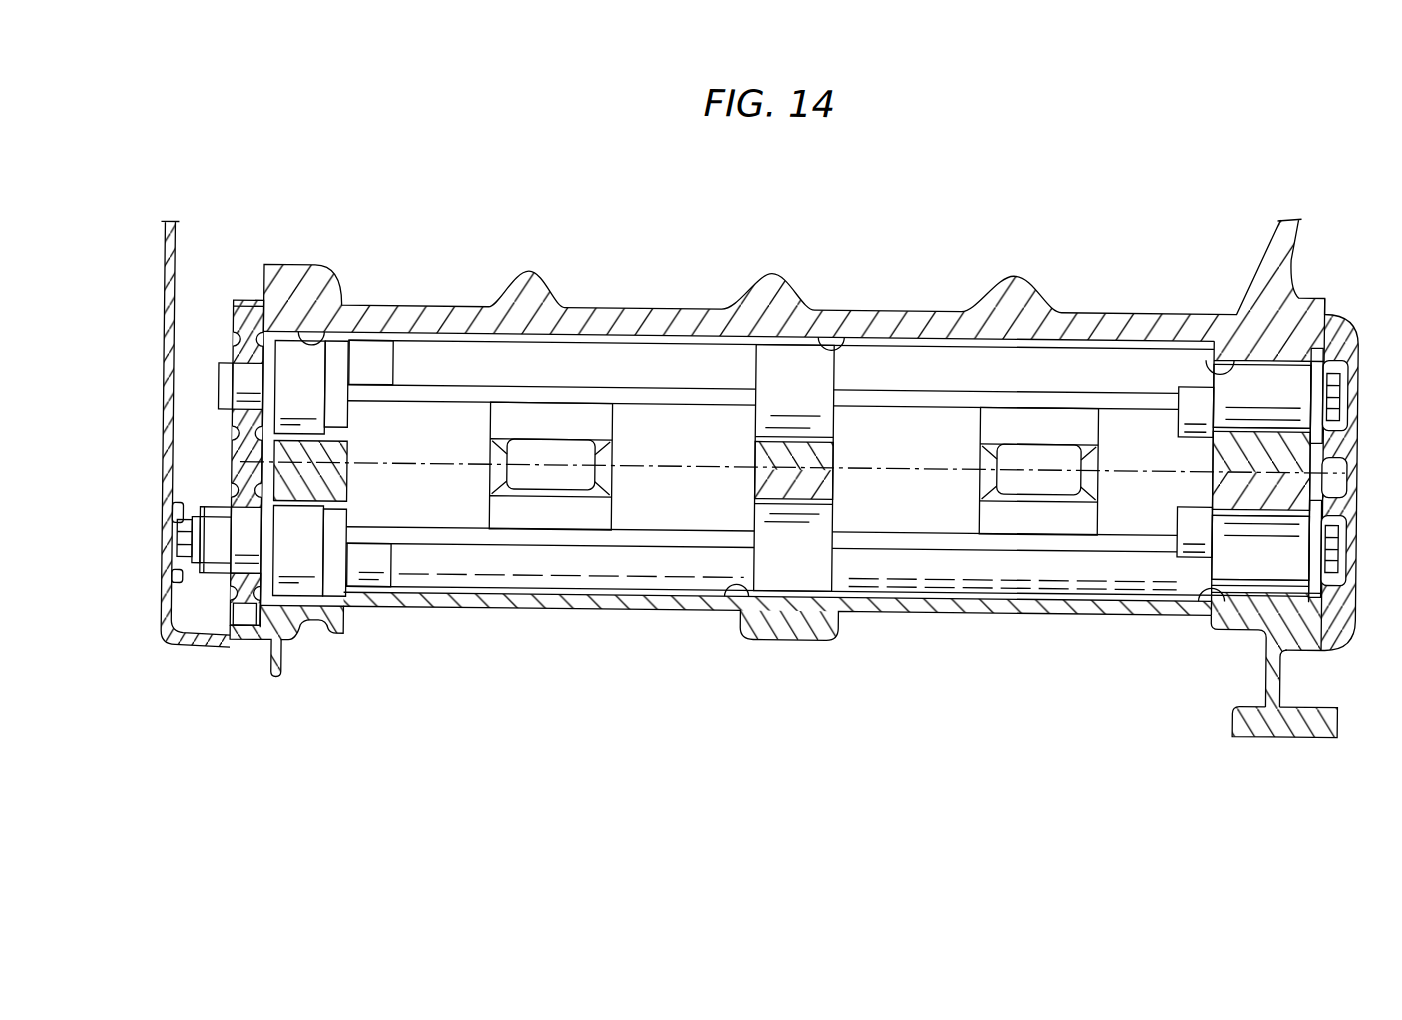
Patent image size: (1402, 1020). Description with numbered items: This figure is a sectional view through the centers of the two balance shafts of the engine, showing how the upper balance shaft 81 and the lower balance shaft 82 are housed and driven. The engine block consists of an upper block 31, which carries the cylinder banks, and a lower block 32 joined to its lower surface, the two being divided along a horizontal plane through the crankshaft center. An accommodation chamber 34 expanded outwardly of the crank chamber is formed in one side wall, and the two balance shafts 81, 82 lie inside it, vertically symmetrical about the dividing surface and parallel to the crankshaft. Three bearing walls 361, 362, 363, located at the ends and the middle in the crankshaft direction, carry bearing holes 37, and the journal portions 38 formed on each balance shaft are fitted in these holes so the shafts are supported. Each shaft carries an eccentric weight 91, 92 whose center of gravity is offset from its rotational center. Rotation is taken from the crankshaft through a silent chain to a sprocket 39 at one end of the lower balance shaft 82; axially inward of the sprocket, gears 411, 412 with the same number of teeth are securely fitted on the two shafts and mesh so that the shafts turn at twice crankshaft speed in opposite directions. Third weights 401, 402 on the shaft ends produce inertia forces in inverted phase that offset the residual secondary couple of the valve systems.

The upper block 31 is at (1287, 240).
The lower block 32 is at (1282, 690).
The accommodation chamber 34 is at (700, 452).
The bearing wall 361 is at (300, 642).
The bearing wall 362 is at (818, 634).
The bearing wall 363 is at (1237, 628).
The bearing hole 37 is at (335, 339).
The journal portion 38 is at (313, 410).
The sprocket 39 is at (208, 567).
The third weight 401 is at (370, 348).
The third weight 402 is at (1190, 396).
The gear 411 is at (247, 301).
The gear 412 is at (248, 626).
The upper balance shaft 81 is at (222, 382).
The lower balance shaft 82 is at (173, 578).
The eccentric weight 91 is at (668, 352).
The eccentric weight 92 is at (642, 594).